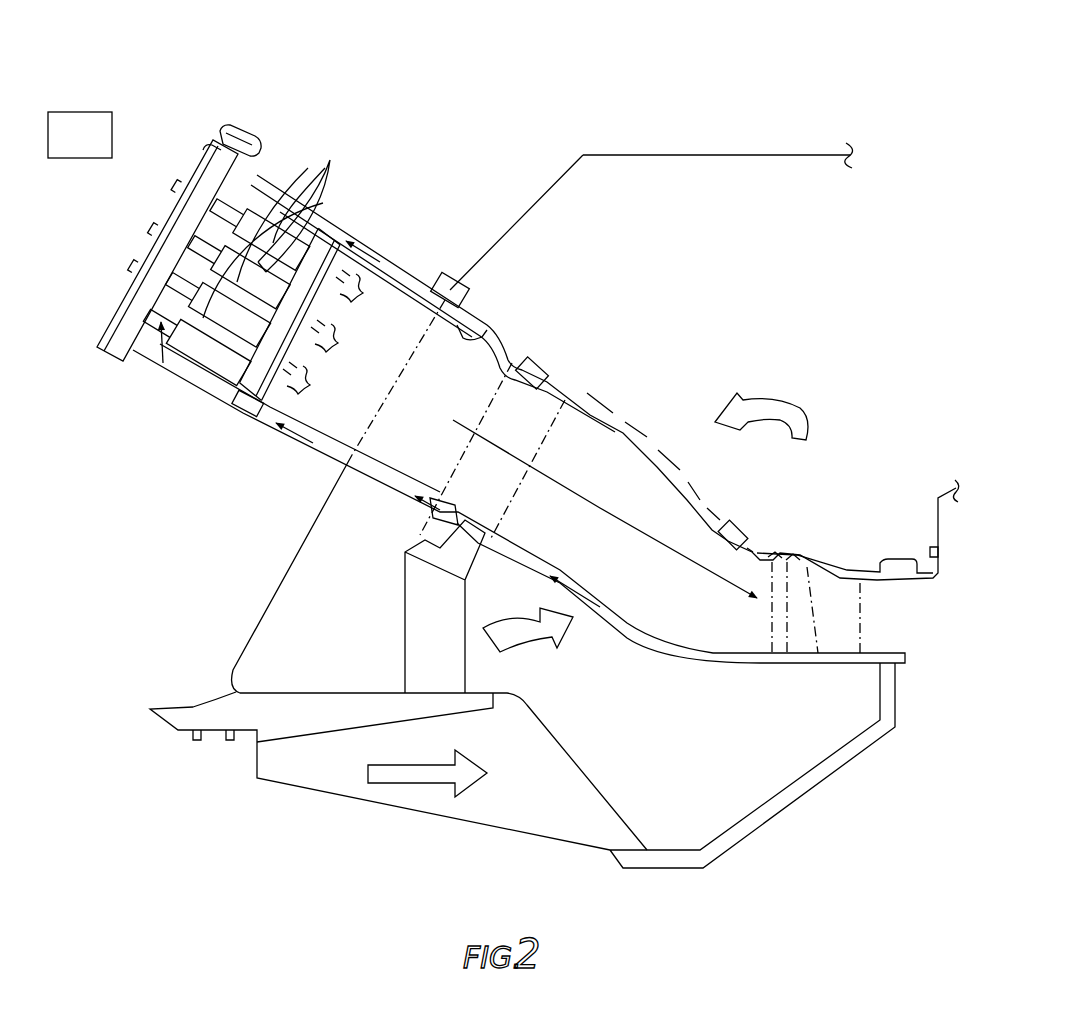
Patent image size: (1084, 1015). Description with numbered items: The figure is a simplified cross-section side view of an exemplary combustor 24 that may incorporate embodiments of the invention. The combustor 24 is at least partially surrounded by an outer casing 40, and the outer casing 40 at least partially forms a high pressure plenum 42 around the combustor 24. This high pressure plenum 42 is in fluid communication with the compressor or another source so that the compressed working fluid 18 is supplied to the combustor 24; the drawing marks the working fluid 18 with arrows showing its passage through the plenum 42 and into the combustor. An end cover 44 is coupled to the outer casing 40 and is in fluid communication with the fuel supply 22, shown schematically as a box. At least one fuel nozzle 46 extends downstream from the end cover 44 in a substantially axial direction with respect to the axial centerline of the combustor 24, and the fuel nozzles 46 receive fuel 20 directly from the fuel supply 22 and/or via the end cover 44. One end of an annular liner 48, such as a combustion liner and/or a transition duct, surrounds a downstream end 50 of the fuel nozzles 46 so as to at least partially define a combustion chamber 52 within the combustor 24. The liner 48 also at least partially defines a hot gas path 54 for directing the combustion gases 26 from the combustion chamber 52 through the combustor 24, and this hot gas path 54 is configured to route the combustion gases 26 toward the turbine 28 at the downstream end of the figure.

The compressed working fluid 18 is at (235, 201).
The fuel 20 is at (97, 213).
The fuel supply 22 is at (145, 248).
The combustor 24 is at (382, 114).
The combustion gases 26 is at (614, 506).
The turbine 28 is at (919, 627).
The outer casing 40 is at (331, 217).
The high pressure plenum 42 is at (728, 225).
The end cover 44 is at (127, 325).
The fuel nozzle 46 is at (303, 201).
The annular liner 48 is at (487, 332).
The downstream end 50 is at (242, 416).
The combustion chamber 52 is at (353, 375).
The hot gas path 54 is at (488, 436).